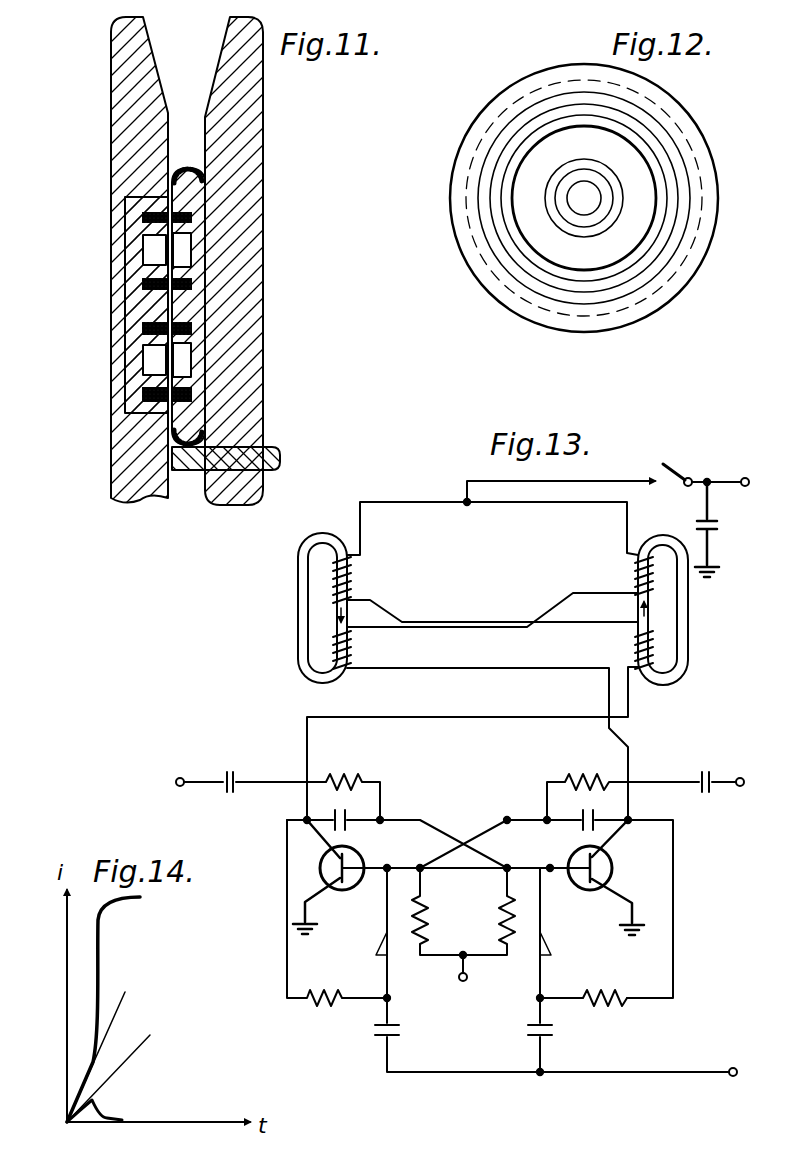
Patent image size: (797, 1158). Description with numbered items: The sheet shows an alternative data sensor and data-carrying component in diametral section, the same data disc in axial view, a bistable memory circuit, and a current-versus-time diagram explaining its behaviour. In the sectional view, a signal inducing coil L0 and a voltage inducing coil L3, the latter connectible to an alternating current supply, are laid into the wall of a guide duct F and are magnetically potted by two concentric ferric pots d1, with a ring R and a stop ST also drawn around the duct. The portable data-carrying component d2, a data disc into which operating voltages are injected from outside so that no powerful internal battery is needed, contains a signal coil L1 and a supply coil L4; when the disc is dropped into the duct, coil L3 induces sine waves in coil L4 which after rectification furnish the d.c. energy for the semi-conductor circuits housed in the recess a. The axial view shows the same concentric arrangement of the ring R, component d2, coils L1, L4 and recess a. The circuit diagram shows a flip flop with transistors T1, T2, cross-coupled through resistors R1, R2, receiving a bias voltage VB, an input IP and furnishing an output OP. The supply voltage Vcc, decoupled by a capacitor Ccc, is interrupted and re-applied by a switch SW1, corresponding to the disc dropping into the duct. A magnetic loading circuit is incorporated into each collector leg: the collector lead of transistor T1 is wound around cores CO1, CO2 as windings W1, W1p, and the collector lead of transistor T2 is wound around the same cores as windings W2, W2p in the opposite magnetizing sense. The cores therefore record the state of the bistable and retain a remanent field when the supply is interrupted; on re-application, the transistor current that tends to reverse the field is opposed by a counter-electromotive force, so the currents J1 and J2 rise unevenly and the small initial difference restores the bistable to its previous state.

In FIG. 11, the guide duct F is at (248, 88).
In FIG. 11, the ring R is at (190, 171).
In FIG. 12, the ring R is at (683, 118).
In FIG. 11, the signal inducing coil L0 is at (145, 215).
In FIG. 11, the signal coil L1 is at (195, 222).
In FIG. 12, the signal coil L1 is at (651, 252).
In FIG. 11, the voltage inducing coil L3 is at (158, 282).
In FIG. 11, the supply coil L4 is at (200, 283).
In FIG. 12, the supply coil L4 is at (587, 220).
In FIG. 11, the ferric pots d1 is at (130, 345).
In FIG. 11, the portable data-carrying component d2 is at (207, 380).
In FIG. 12, the portable data-carrying component d2 is at (647, 157).
In FIG. 11, the recess a is at (178, 362).
In FIG. 12, the recess a is at (545, 240).
In FIG. 11, the support bar ST is at (270, 460).
In FIG. 13, the magnetic core 1 CO1 is at (297, 645).
In FIG. 13, the magnetic core 2 CO2 is at (689, 650).
In FIG. 13, the transistor current J1 is at (492, 528).
In FIG. 14, the transistor current J1 is at (102, 1047).
In FIG. 13, the transistor current J2 is at (591, 534).
In FIG. 14, the transistor current J2 is at (117, 1074).
In FIG. 13, the winding W1 is at (485, 589).
In FIG. 13, the winding W2 is at (500, 592).
In FIG. 13, the winding W1p is at (480, 725).
In FIG. 13, the winding W2p is at (480, 725).
In FIG. 13, the switch SW1 is at (581, 468).
In FIG. 13, the supply voltage Vcc is at (719, 469).
In FIG. 13, the supply capacitor Ccc is at (722, 529).
In FIG. 13, the resistor R1 is at (587, 784).
In FIG. 13, the resistor R2 is at (351, 784).
In FIG. 13, the transistor T1 is at (597, 877).
In FIG. 13, the transistor T2 is at (338, 877).
In FIG. 13, the bias voltage terminal VB is at (463, 942).
In FIG. 13, the output terminal OP is at (687, 771).
In FIG. 13, the input terminal IP is at (722, 1097).